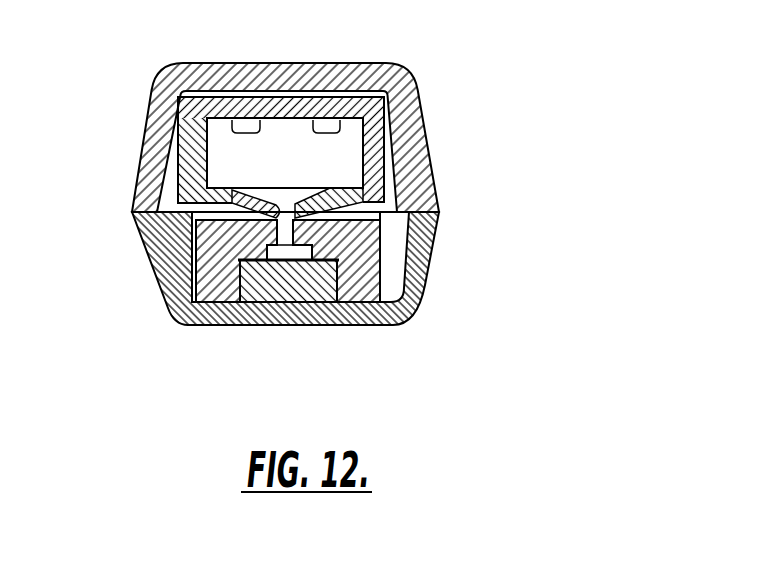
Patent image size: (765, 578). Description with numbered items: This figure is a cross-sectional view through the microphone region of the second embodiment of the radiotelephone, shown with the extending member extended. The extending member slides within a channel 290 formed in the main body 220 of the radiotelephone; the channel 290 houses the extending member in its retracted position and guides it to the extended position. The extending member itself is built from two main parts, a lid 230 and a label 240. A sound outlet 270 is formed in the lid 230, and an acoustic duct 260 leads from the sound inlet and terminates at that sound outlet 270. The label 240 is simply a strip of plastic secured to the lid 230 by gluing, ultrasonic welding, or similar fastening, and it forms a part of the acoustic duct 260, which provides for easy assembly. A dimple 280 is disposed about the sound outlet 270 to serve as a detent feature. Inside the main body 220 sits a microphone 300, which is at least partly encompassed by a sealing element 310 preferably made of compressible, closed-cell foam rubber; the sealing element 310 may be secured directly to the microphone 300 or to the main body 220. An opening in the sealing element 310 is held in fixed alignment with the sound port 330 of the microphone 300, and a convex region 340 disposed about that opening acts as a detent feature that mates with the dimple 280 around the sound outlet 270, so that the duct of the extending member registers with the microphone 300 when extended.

The main body 220 is at (358, 78).
The lid 230 is at (360, 284).
The label 240 is at (348, 320).
The acoustic duct 260 is at (287, 250).
The sound outlet 270 is at (290, 236).
The dimple 280 is at (272, 232).
The channel 290 is at (262, 240).
The microphone 300 is at (340, 160).
The sealing element 310 is at (375, 175).
The sound port 330 is at (278, 219).
The convex region 340 is at (315, 207).